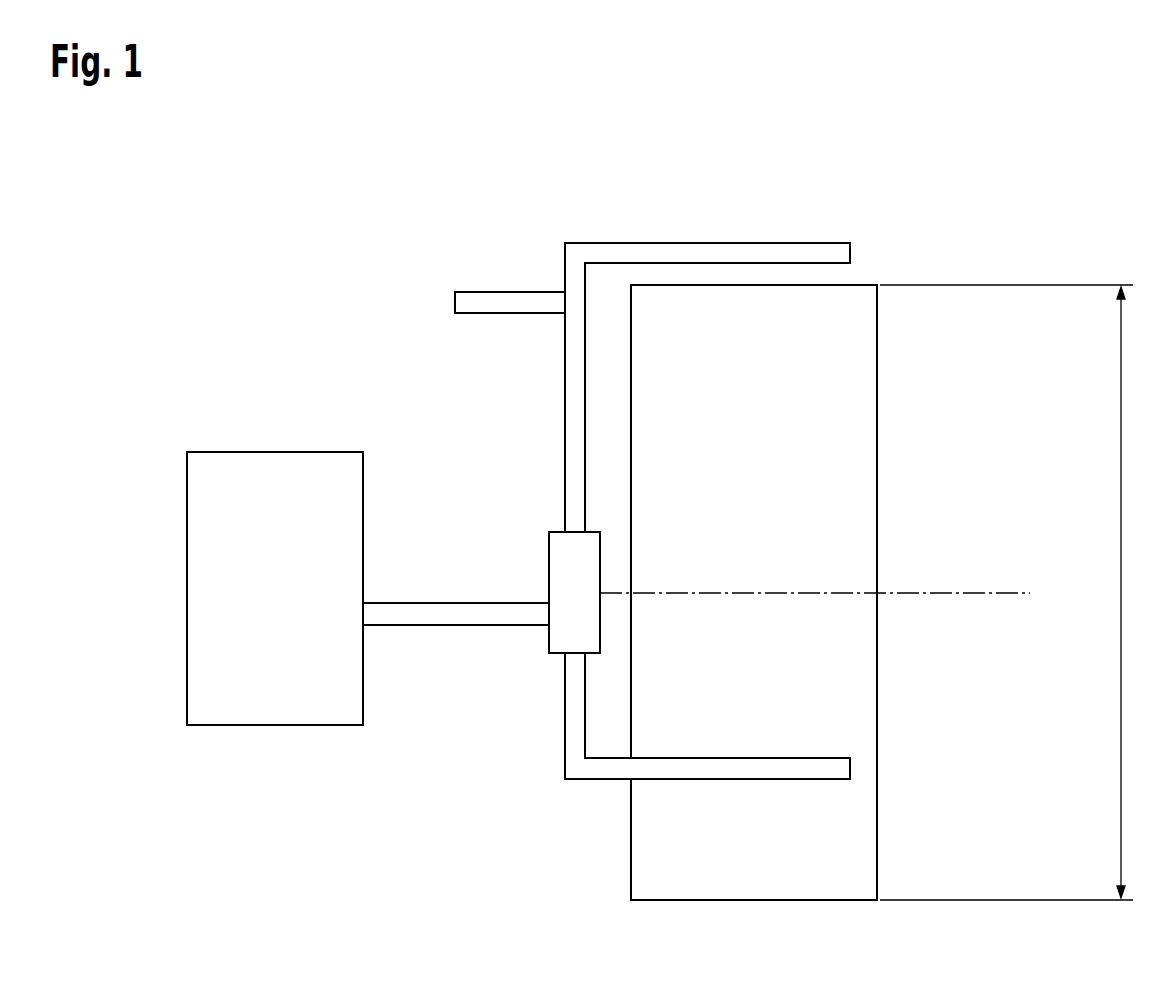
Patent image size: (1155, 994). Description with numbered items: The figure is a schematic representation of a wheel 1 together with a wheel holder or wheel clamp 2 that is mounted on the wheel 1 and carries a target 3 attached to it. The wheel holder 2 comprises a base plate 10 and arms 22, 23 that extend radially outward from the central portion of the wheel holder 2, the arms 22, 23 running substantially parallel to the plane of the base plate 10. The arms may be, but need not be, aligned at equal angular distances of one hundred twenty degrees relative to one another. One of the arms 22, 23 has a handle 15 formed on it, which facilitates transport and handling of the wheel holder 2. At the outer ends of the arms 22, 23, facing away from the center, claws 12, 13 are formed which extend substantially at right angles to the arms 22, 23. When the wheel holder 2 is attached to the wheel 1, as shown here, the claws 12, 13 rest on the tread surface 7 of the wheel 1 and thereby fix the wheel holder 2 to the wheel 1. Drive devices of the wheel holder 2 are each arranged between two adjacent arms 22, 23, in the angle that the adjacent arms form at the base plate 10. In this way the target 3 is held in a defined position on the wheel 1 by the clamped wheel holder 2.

The wheel 1 is at (803, 510).
The wheel holder 2 is at (456, 814).
The target 3 is at (205, 506).
The tread surface 7 is at (860, 372).
The base plate 10 is at (572, 550).
The claw 12 is at (803, 212).
The claw 13 is at (584, 803).
The handle 15 is at (500, 277).
The arm 22 is at (662, 326).
The arm 23 is at (662, 775).